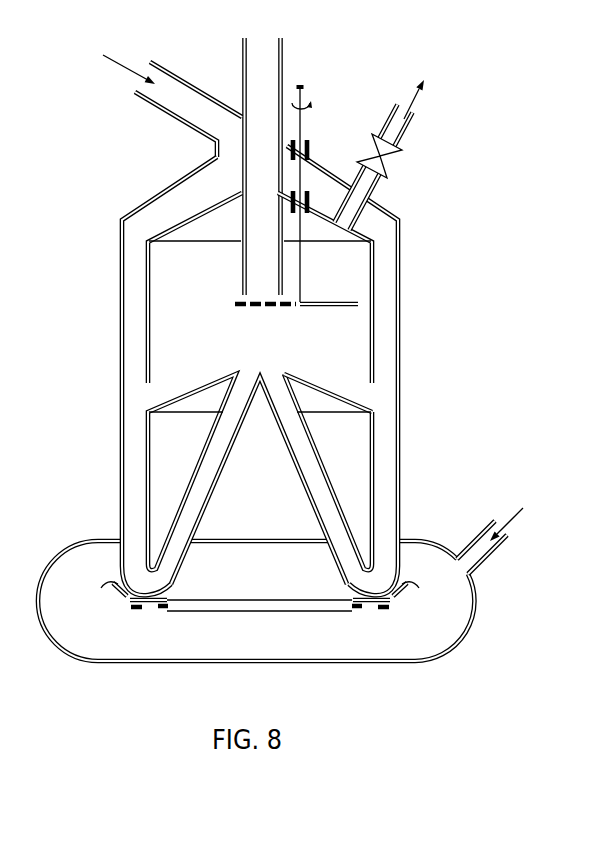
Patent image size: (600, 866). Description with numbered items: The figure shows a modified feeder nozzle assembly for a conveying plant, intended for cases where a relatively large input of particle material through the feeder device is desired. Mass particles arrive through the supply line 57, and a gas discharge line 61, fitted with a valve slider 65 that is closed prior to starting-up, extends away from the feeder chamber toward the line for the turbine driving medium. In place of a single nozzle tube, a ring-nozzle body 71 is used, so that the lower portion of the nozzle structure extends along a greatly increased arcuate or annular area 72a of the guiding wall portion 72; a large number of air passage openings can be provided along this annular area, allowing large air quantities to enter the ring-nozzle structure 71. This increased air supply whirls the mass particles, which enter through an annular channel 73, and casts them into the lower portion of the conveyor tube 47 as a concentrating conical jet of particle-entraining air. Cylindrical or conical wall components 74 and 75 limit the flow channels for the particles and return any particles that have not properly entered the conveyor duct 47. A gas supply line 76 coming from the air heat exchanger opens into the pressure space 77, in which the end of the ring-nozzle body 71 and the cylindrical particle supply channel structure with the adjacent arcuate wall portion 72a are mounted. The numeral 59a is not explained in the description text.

The conveyor duct 47 is at (243, 64).
The supply line for mass particles 57 is at (171, 98).
The gas discharge line 61 is at (371, 185).
The valve slider 65 is at (401, 151).
The ring-nozzle body 71 is at (206, 454).
The guiding wall portion 72 is at (122, 455).
The annular channel 73 is at (389, 452).
The wall component 74 is at (371, 452).
The wall component 75 is at (345, 402).
The gas supply line 76 is at (493, 550).
The pressure space 77 is at (64, 555).
The arcuate wall portion 72a is at (127, 600).
The outlet flange 59a is at (153, 612).